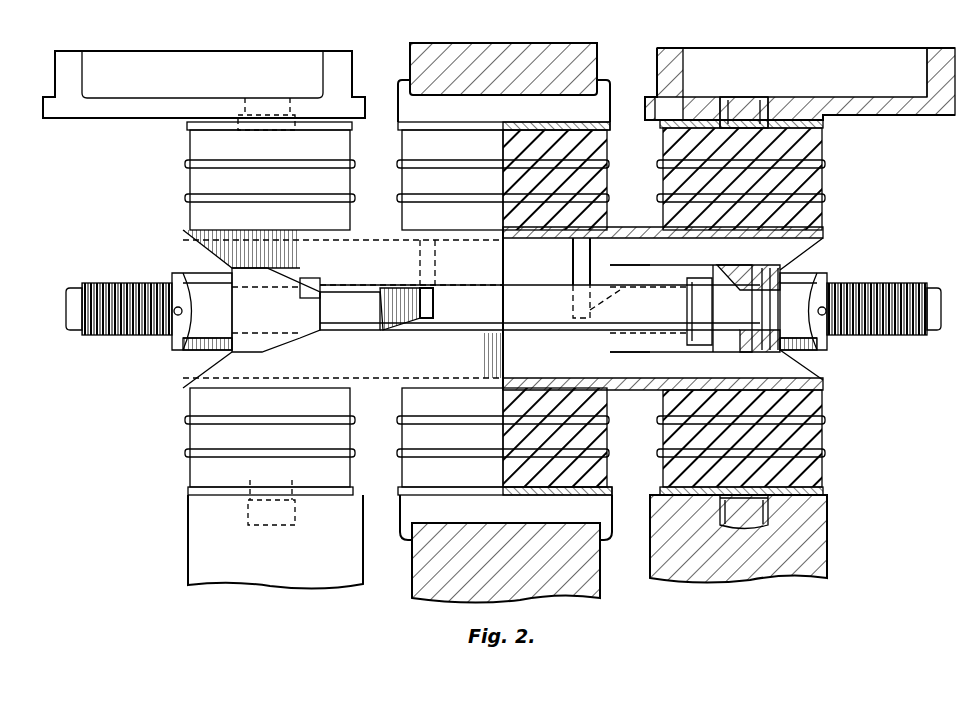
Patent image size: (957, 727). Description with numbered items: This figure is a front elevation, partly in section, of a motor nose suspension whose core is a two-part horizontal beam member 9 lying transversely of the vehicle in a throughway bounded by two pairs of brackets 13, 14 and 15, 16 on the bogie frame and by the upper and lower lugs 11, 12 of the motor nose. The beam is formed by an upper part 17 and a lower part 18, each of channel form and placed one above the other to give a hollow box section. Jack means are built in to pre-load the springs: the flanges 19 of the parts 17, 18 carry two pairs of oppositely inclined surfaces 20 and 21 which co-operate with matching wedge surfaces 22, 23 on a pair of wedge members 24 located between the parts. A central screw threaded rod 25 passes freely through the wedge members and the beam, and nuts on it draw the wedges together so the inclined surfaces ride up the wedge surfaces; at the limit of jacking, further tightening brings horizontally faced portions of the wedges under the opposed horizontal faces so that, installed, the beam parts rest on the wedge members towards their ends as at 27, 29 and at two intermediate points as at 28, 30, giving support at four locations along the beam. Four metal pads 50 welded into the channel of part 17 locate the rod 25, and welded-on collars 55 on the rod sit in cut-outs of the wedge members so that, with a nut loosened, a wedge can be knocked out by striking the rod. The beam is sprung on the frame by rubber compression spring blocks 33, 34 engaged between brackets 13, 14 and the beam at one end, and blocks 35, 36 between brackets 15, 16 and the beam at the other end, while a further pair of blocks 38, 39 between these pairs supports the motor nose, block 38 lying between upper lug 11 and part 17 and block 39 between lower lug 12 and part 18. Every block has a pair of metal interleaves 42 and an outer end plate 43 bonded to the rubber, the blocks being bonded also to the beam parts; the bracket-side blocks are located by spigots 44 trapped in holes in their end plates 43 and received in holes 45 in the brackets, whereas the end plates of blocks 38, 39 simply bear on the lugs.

The beam member 9 is at (232, 255).
The upper lug 11 is at (595, 100).
The lower lug 12 is at (600, 535).
The bracket 13 is at (128, 106).
The bracket 14 is at (200, 555).
The bracket 15 is at (858, 105).
The bracket 16 is at (820, 510).
The upper beam member part 17 is at (385, 245).
The lower beam member part 18 is at (400, 372).
The flange 19 is at (503, 360).
The inclined surface 20 is at (183, 244).
The inclined surface 21 is at (680, 266).
The wedge surface 22 is at (275, 290).
The wedge surface 23 is at (410, 285).
The wedge member 24 is at (208, 322).
The screw threaded rod 25 is at (560, 330).
The horizontal face 27 is at (232, 268).
The horizontal face 28 is at (375, 290).
The horizontal face 29 is at (240, 325).
The intermediate support point 30 is at (385, 330).
The rubber compression spring block 33 is at (190, 178).
The rubber compression spring block 34 is at (230, 428).
The rubber compression spring block 35 is at (800, 150).
The rubber compression spring block 36 is at (800, 408).
The rubber spring block 38 is at (455, 140).
The rubber spring block 39 is at (495, 465).
The metal interleaf 42 is at (355, 198).
The outer end plate 43 is at (187, 126).
The locating spigot 44 is at (250, 98).
The hole 45 is at (282, 105).
The metal pad 50 is at (440, 280).
The collar 55 is at (310, 278).